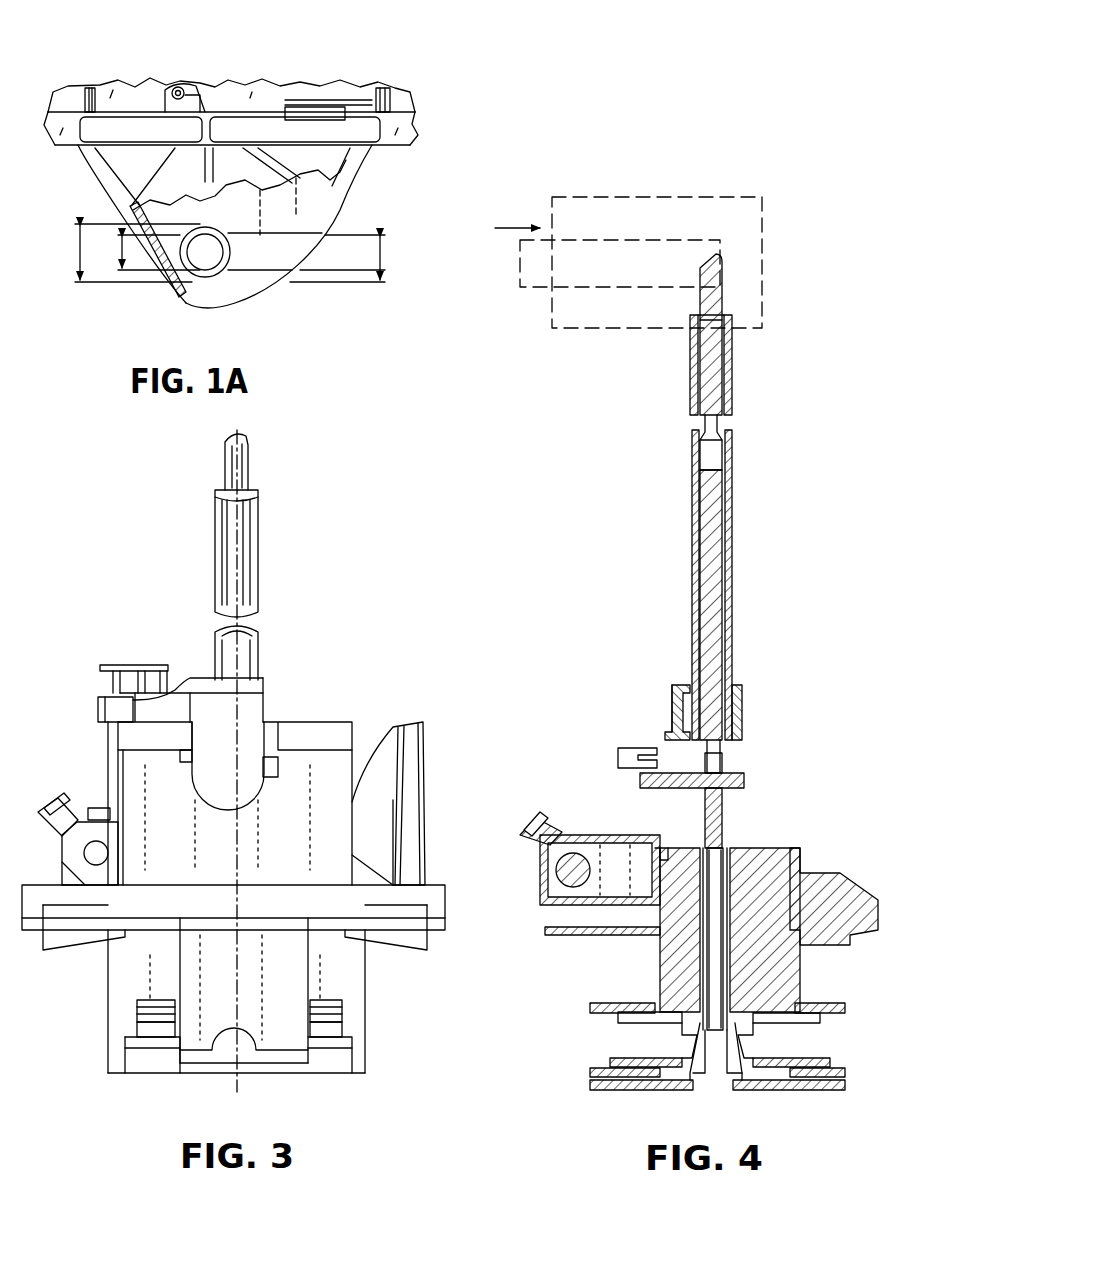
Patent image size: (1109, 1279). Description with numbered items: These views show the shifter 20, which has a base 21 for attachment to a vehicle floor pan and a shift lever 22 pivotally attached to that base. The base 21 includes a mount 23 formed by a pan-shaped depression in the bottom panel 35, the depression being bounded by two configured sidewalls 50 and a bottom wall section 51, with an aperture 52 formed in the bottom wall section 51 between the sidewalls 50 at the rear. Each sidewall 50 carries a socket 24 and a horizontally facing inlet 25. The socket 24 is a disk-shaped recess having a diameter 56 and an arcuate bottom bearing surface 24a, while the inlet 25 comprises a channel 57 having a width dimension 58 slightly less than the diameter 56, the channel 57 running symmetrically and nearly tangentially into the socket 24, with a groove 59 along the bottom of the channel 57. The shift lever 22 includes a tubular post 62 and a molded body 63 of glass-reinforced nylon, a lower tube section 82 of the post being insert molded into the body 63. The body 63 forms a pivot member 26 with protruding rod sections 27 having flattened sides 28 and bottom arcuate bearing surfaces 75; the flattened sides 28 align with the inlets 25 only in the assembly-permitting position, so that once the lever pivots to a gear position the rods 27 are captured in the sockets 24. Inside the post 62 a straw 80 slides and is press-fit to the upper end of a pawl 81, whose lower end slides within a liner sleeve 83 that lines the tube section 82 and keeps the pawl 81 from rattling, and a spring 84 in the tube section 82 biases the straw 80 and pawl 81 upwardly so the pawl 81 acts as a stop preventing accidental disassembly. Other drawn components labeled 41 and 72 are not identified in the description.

In FIG. 1A, the shifter 20 is at (157, 50).
In FIG. 3, the shifter 20 is at (324, 476).
In FIG. 4, the shifter 20 is at (824, 322).
In FIG. 1A, the base 21 is at (60, 90).
In FIG. 3, the base 21 is at (425, 722).
In FIG. 4, the base 21 is at (848, 862).
In FIG. 3, the shift lever 22 is at (268, 624).
In FIG. 4, the shift lever 22 is at (736, 548).
In FIG. 1A, the mount 23 is at (200, 316).
In FIG. 4, the mount 23 is at (645, 1090).
In FIG. 1A, the sockets 24 is at (200, 290).
In FIG. 4, the sockets 24 is at (598, 1016).
In FIG. 4, the arcuate bottom bearing surfaces 24a is at (822, 1072).
In FIG. 1A, the inlets 25 is at (244, 294).
In FIG. 3, the pivot member 26 is at (210, 1080).
In FIG. 4, the pivot member 26 is at (776, 862).
In FIG. 3, the rod sections 27 is at (118, 1075).
In FIG. 4, the rod sections 27 is at (635, 1025).
In FIG. 3, the flattened sides 28 is at (165, 1045).
In FIG. 4, the bottom panel 35 is at (762, 1092).
In FIG. 3, the block 41 is at (128, 740).
In FIG. 3, the configured sidewalls 50 is at (108, 1048).
In FIG. 3, the bottom wall section 51 is at (258, 1075).
In FIG. 3, the aperture 52 is at (185, 972).
In FIG. 1A, the diameter 56 is at (78, 258).
In FIG. 1A, the channel 57 is at (272, 262).
In FIG. 1A, the width dimension 58 is at (385, 258).
In FIG. 1A, the groove 59 is at (240, 272).
In FIG. 3, the tubular post 62 is at (258, 534).
In FIG. 4, the tubular post 62 is at (690, 385).
In FIG. 3, the molded body 63 is at (270, 676).
In FIG. 3, the cover 72 is at (165, 692).
In FIG. 4, the bottom arcuate bearing surfaces 75 is at (656, 1076).
In FIG. 4, the straw 80 is at (730, 440).
In FIG. 4, the pawl 81 is at (640, 783).
In FIG. 4, the lower tube section 82 is at (781, 975).
In FIG. 4, the liner sleeve 83 is at (718, 932).
In FIG. 4, the spring 84 is at (745, 856).